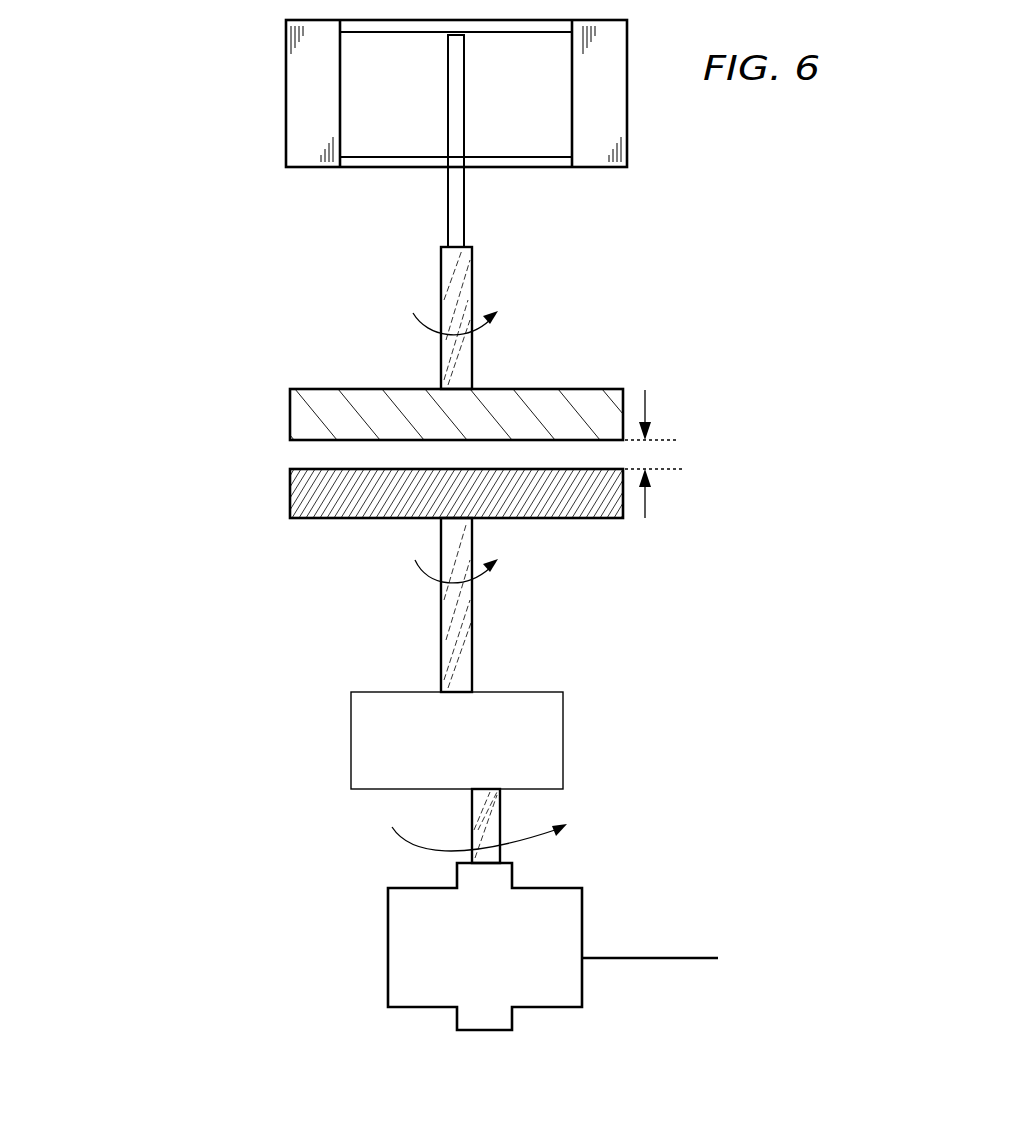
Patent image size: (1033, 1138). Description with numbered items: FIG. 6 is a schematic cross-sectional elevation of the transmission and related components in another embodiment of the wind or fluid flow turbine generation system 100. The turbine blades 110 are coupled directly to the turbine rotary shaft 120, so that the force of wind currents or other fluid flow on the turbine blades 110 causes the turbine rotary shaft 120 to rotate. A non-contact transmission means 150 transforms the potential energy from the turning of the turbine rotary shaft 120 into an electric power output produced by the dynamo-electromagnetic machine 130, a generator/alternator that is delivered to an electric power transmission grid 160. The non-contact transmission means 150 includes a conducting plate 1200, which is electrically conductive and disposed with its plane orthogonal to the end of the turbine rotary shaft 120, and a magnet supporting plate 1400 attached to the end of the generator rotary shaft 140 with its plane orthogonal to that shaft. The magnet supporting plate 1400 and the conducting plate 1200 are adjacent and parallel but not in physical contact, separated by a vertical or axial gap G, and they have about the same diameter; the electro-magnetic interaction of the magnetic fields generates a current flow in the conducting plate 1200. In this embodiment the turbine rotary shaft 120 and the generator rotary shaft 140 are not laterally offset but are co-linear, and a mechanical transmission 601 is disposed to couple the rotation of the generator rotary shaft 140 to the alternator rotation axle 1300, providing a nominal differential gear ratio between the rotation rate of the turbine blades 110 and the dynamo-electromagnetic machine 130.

The wind or fluid flow turbine generation system 100 is at (148, 278).
The turbine blades 110 is at (627, 133).
The turbine rotary shaft 120 is at (467, 292).
The conducting plate 1200 is at (343, 389).
The non-contact transmission means 150 is at (233, 380).
The vertical or axial gap G is at (643, 455).
The magnet supporting plate 1400 is at (623, 518).
The generator rotary shaft 140 is at (472, 637).
The mechanical transmission 601 is at (460, 751).
The alternator rotation axle 1300 is at (468, 812).
The dynamo-electromagnetic machine 130 is at (499, 962).
The electric power transmission grid 160 is at (620, 963).